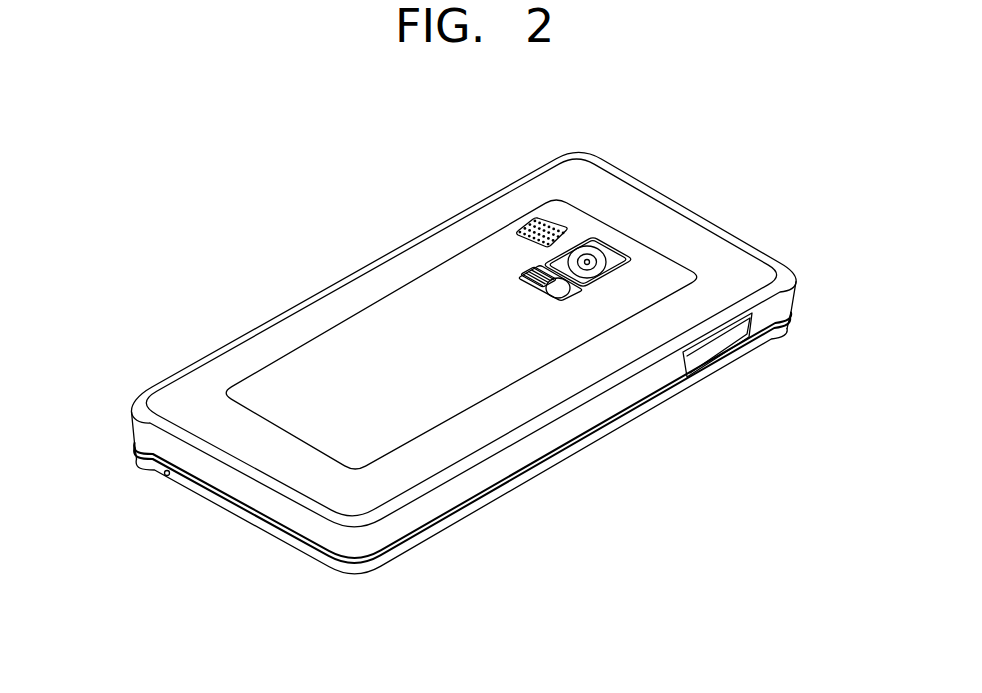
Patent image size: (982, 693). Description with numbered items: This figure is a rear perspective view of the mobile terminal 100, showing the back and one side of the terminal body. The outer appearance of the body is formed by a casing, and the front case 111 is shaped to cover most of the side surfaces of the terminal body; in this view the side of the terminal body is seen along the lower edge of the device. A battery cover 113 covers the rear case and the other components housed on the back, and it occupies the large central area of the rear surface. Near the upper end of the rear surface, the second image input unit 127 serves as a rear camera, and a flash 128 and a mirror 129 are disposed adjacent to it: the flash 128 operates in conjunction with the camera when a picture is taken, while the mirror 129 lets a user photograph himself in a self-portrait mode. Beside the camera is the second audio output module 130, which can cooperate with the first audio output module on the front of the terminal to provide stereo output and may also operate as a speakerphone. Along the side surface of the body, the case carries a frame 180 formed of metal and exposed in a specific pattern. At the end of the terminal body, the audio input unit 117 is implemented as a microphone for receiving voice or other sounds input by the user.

The mobile terminal 100 is at (270, 294).
The front case 111 is at (790, 299).
The battery cover 113 is at (373, 283).
The audio input unit 117 is at (163, 476).
The second image input unit 127 is at (586, 259).
The flash 128 is at (538, 270).
The mirror 129 is at (546, 290).
The second audio output module 130 is at (535, 229).
The frame 180 is at (601, 430).